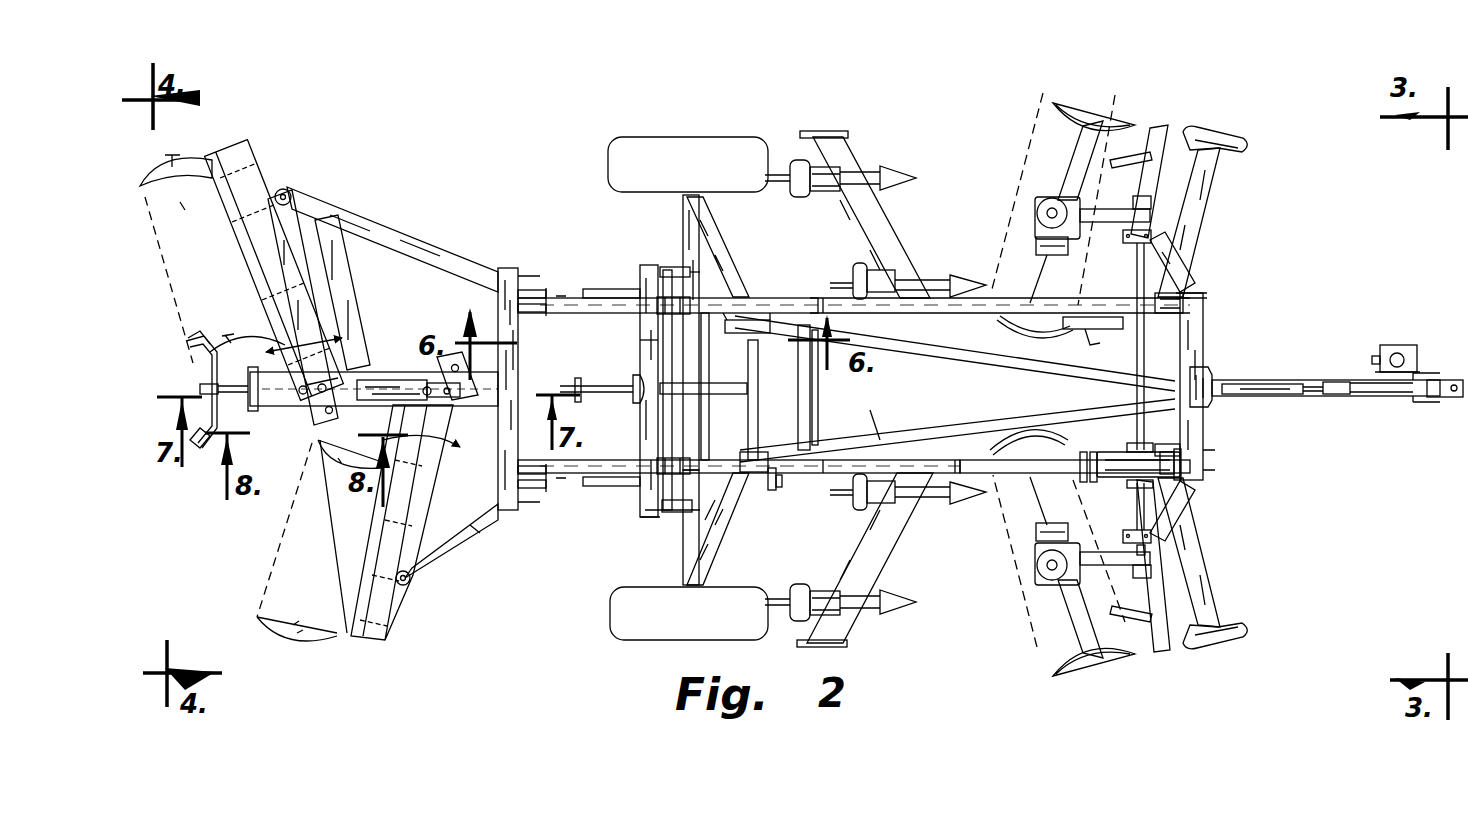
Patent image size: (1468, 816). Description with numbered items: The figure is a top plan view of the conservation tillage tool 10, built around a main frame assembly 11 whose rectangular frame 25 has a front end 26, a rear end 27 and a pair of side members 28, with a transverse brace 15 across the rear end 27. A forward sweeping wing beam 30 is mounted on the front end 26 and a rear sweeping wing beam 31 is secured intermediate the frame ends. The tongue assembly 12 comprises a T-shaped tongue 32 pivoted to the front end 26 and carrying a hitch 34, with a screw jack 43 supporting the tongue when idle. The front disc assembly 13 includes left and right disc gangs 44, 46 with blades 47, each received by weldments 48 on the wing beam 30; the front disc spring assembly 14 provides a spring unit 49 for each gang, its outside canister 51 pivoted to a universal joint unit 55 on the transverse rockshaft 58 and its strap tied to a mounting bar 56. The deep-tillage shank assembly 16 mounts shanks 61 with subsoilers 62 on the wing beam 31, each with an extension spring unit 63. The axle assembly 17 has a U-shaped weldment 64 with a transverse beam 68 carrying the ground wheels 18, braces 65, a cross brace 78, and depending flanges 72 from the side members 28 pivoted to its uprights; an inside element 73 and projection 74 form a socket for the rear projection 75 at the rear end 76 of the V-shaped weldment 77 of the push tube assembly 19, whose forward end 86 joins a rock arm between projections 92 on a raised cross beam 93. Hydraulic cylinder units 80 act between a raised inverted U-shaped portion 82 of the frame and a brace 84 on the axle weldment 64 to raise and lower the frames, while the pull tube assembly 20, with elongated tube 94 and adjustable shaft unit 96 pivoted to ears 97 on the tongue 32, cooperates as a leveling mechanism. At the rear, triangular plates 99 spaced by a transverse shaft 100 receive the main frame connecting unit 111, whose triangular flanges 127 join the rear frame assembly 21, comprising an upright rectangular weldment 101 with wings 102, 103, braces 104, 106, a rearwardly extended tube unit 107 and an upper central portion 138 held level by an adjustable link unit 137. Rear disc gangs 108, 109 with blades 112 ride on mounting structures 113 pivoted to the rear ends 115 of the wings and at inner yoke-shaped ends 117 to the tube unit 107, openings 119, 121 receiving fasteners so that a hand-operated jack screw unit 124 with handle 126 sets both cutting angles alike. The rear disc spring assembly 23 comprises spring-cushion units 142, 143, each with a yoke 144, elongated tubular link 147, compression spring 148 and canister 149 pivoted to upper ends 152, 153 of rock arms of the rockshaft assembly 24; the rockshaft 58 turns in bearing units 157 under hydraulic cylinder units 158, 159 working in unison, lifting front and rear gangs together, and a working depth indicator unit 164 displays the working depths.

The conservation tillage tool 10 is at (963, 108).
The main frame assembly 11 is at (810, 286).
The tongue assembly 12 is at (1368, 322).
The front disc assembly 13 is at (1020, 155).
The front disc spring assembly 14 is at (1025, 195).
The transverse brace 15 is at (640, 341).
The deep-tillage shank assembly 16 is at (905, 640).
The axle assembly 17 is at (660, 230).
The ground wheels 18 is at (700, 137).
The push tube assembly 19 is at (915, 347).
The pull tube assembly 20 is at (1300, 400).
The rear frame assembly 21 is at (410, 190).
The rear disc spring assembly 23 is at (1005, 475).
The rockshaft assembly 24 is at (1170, 342).
The rectangular frame 25 is at (1180, 255).
The front end 26 is at (1203, 345).
The rear end 27 is at (640, 431).
The side members 28 is at (790, 296).
The forward sweeping wing beam 30 is at (1210, 196).
The rear sweeping wing beam 31 is at (895, 226).
The T-shaped tongue 32 is at (1370, 398).
The hitch 34 is at (1443, 380).
The screw jack 43 is at (1400, 345).
The left disc gang 44 is at (1040, 92).
The right disc gang 46 is at (1040, 647).
The blades 47 is at (1098, 118).
The weldments 48 is at (1163, 128).
The spring unit 49 is at (1033, 233).
The outside canister 51 is at (1033, 215).
The universal joint unit 55 is at (1095, 207).
The mounting bar 56 is at (1080, 160).
The transverse rockshaft 58 is at (1145, 515).
The shanks 61 is at (870, 170).
The subsoilers 62 is at (910, 174).
The extension spring unit 63 is at (797, 160).
The U-shaped weldment 64 is at (733, 226).
The braces 65 is at (737, 255).
The transverse beam 68 is at (687, 543).
The depending flanges 72 is at (758, 298).
The inside element 73 is at (742, 323).
The projection 74 is at (750, 352).
The rear projection 75 is at (770, 403).
The rear end 76 is at (812, 393).
The V-shaped weldment 77 is at (877, 428).
The cross brace 78 is at (750, 403).
The hydraulic cylinder units 80 is at (665, 270).
The raised inverted U-shaped portion 82 is at (650, 510).
The brace 84 is at (708, 533).
The forward end 86 is at (1172, 397).
The projections 92 is at (1216, 378).
The raised cross beam 93 is at (1185, 460).
The elongated tube 94 is at (1272, 384).
The adjustable shaft unit 96 is at (1308, 384).
The ears 97 is at (1340, 396).
The triangular plates 99 is at (598, 289).
The transverse shaft 100 is at (660, 360).
The upright rectangular weldment 101 is at (543, 266).
The wing 102 is at (425, 245).
The wing 103 is at (463, 545).
The brace 104 is at (447, 268).
The brace 106 is at (437, 559).
The tube unit 107 is at (273, 410).
The rear disc gang 108 is at (197, 165).
The rear disc gang 109 is at (272, 560).
The main frame connecting unit 111 is at (558, 245).
The blades 112 is at (293, 637).
The mounting structure 113 is at (292, 224).
The rear end 115 is at (260, 195).
The inner yoke-shaped end 117 is at (450, 352).
The opening 119 is at (303, 408).
The opening 121 is at (425, 380).
The jack screw hand-operated unit 124 is at (203, 385).
The handle 126 is at (205, 460).
The triangular flanges 127 is at (560, 298).
The adjustable link unit 137 is at (582, 430).
The upper central portion 138 is at (520, 360).
The spring-cushion unit 142 is at (1165, 270).
The spring-cushion unit 143 is at (1163, 490).
The yoke 144 is at (640, 318).
The elongated tubular link 147 is at (825, 296).
The compression spring 148 is at (1088, 452).
The canister 149 is at (1165, 288).
The upper end 152 is at (1153, 446).
The upper end 153 is at (1165, 458).
The bearing units 157 is at (1152, 253).
The hydraulic cylinder unit 158 is at (1088, 333).
The hydraulic cylinder unit 159 is at (1060, 440).
The working depth indicator unit 164 is at (774, 484).